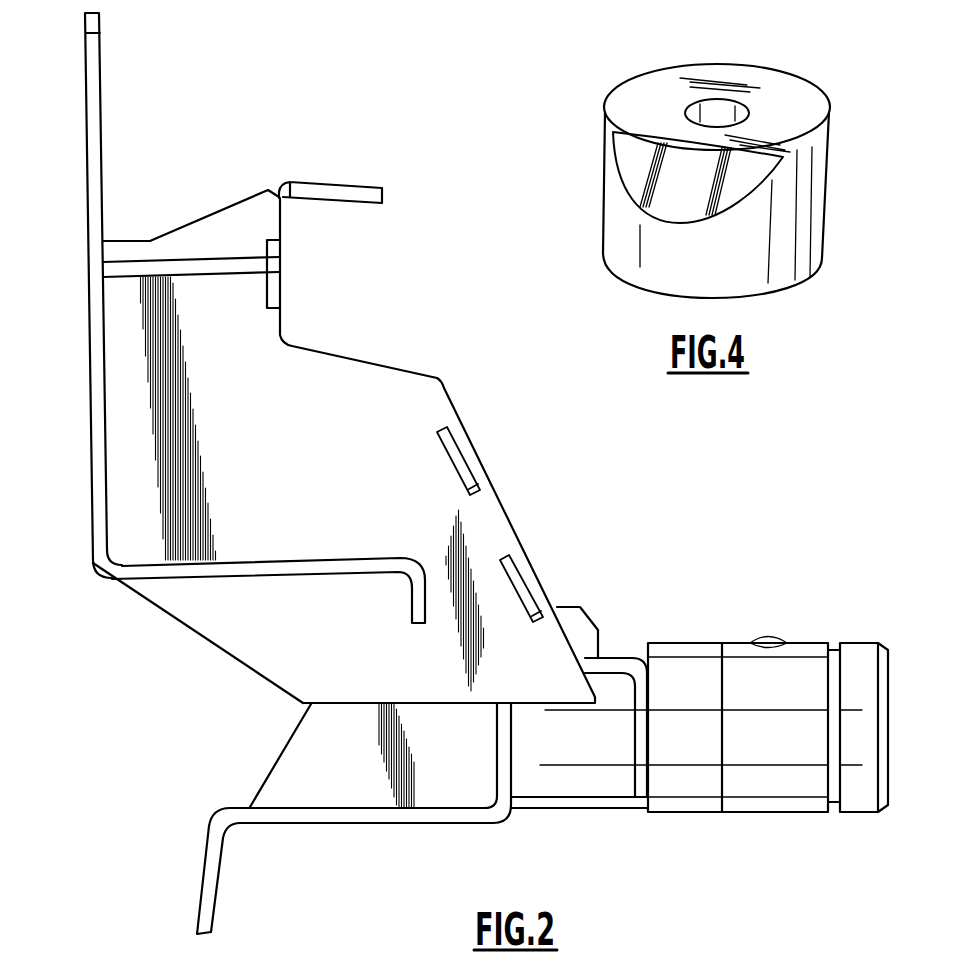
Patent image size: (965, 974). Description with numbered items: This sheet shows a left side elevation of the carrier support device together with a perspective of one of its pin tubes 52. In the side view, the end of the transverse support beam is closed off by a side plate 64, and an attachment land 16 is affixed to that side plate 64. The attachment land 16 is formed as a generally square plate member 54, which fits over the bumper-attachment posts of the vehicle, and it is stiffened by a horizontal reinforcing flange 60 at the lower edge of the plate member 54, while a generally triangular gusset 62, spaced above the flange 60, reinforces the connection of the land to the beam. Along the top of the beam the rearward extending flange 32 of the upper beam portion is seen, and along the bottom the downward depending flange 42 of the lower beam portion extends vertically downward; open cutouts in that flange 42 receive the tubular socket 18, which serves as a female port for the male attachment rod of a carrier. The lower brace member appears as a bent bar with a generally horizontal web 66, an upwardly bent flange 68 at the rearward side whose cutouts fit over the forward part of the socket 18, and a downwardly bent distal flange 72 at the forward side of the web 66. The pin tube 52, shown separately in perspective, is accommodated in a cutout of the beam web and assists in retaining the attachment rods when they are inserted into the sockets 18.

In FIG. 2, the attachment land 16 is at (78, 466).
In FIG. 2, the tubular socket 18 is at (742, 667).
In FIG. 2, the proximal extending flange 32 is at (335, 183).
In FIG. 2, the downward depending flange 42 is at (642, 768).
In FIG. 2, the pin tube 52 is at (596, 625).
In FIG. 4, the pin tube 52 is at (803, 232).
In FIG. 2, the plate member 54 is at (98, 337).
In FIG. 2, the horizontal reinforcing flange 60 is at (271, 562).
In FIG. 2, the gusset 62 is at (177, 252).
In FIG. 2, the side plate 64 is at (362, 389).
In FIG. 2, the horizontal web 66 is at (398, 815).
In FIG. 2, the upwardly bent flange 68 is at (512, 768).
In FIG. 2, the downwardly bent distal flange 72 is at (215, 898).